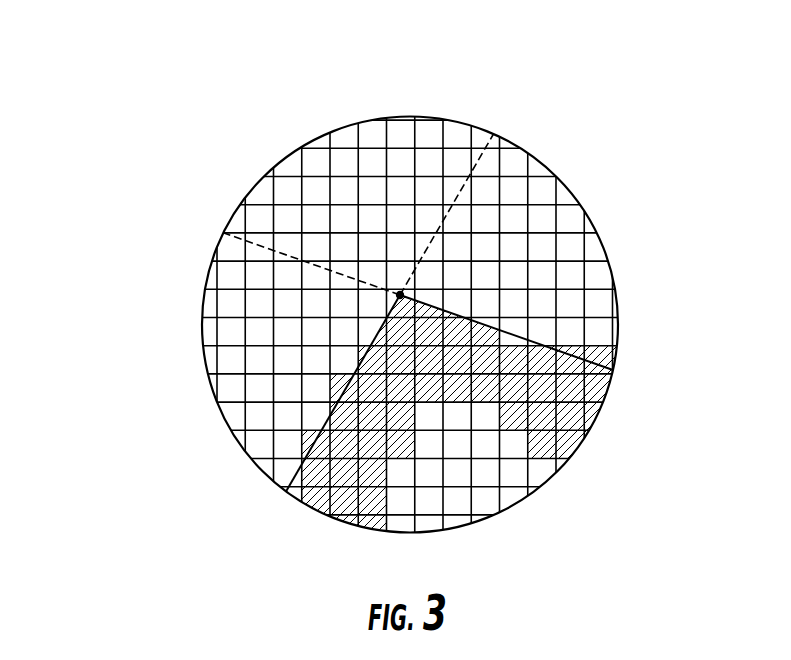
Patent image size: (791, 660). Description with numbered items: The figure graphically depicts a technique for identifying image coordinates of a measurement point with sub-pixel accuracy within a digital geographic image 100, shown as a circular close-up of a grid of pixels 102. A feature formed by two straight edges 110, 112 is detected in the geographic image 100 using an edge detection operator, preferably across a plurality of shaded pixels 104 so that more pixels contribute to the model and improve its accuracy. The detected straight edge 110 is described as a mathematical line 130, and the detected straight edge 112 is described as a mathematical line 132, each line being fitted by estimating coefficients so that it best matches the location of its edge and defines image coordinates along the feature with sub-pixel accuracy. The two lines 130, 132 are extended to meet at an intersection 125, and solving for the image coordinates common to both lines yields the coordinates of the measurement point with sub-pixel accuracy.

The digital geographic image 100 is at (557, 92).
The pixels 102 is at (563, 193).
The shaded pixels 104 is at (573, 417).
The straight edge 110 is at (482, 393).
The straight edge 112 is at (387, 452).
The intersection 125 is at (400, 294).
The line 130 is at (515, 333).
The line 132 is at (326, 426).